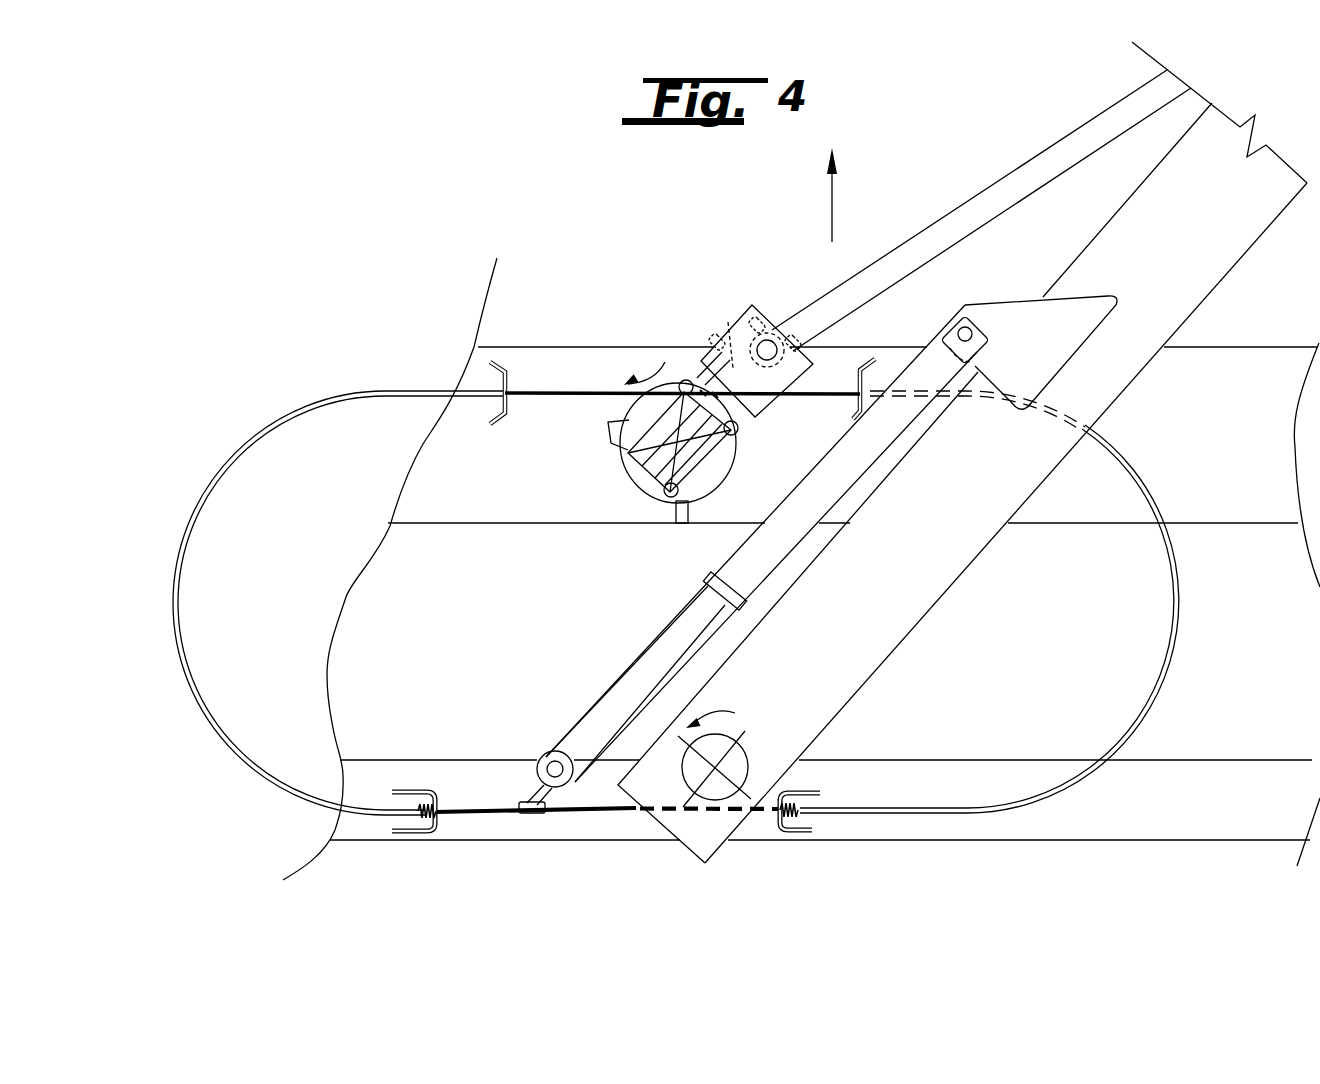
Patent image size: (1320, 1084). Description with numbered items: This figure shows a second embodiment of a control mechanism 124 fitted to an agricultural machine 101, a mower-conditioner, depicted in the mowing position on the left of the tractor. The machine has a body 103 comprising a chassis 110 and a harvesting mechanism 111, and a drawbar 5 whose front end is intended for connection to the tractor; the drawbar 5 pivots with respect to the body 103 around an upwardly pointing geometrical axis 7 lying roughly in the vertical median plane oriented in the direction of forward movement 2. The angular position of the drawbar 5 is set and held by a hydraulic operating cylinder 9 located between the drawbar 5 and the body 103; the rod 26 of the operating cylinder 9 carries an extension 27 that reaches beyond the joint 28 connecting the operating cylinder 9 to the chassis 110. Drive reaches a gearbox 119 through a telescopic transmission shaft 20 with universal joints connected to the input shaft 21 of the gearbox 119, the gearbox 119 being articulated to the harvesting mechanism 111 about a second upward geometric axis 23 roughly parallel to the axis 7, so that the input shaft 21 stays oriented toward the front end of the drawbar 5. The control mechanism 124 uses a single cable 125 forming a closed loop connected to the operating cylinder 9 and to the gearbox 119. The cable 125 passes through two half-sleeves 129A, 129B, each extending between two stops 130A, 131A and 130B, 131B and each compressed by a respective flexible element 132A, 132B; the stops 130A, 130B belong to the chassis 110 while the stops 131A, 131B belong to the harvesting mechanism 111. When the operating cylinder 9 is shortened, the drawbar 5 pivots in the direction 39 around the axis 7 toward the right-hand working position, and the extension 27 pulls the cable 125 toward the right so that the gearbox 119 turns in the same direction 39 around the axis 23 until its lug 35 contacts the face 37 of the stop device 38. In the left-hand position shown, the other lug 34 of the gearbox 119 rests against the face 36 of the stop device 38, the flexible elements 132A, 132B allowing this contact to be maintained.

The direction of forward movement 2 is at (830, 211).
The drawbar 5 is at (958, 570).
The geometrical axis 7 is at (713, 770).
The hydraulic operating cylinder 9 is at (672, 627).
The telescopic transmission shaft 20 is at (969, 204).
The input shaft 21 is at (732, 343).
The geometric axis 23 is at (736, 437).
The rod 26 is at (622, 700).
The extension 27 is at (526, 798).
The joint 28 is at (546, 756).
The lug 34 is at (694, 505).
The lug 35 is at (608, 423).
The face 36 is at (694, 521).
The face 37 is at (676, 515).
The stop device 38 is at (684, 523).
The direction 39 is at (665, 358).
The agricultural machine 101 is at (628, 242).
The body 103 is at (1228, 662).
The chassis 110 is at (1258, 764).
The harvesting mechanism 111 is at (559, 344).
The gearbox 119 is at (672, 378).
The control mechanism 124 is at (238, 733).
The cable 125 is at (587, 814).
The half-sleeve 129A is at (237, 450).
The half-sleeve 129B is at (1157, 503).
The stop 130A is at (407, 833).
The stop 130B is at (810, 831).
The stop 131A is at (505, 432).
The stop 131B is at (865, 365).
The flexible element 132A is at (423, 805).
The flexible element 132B is at (790, 805).